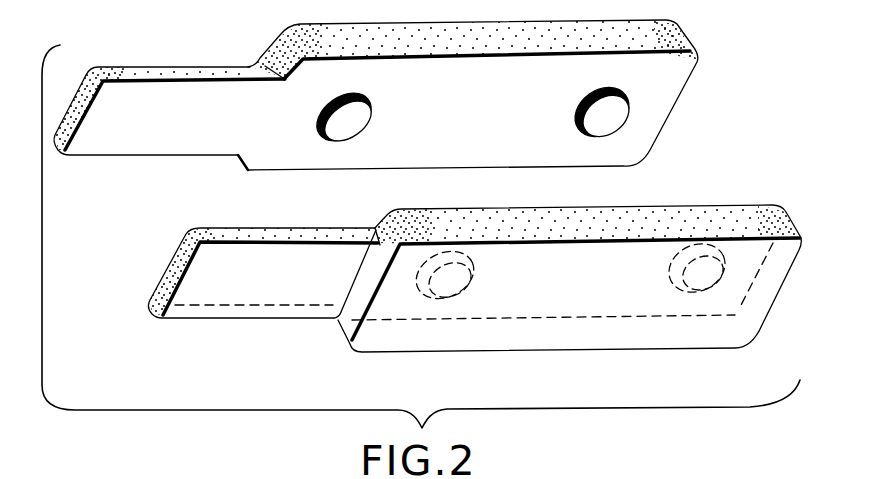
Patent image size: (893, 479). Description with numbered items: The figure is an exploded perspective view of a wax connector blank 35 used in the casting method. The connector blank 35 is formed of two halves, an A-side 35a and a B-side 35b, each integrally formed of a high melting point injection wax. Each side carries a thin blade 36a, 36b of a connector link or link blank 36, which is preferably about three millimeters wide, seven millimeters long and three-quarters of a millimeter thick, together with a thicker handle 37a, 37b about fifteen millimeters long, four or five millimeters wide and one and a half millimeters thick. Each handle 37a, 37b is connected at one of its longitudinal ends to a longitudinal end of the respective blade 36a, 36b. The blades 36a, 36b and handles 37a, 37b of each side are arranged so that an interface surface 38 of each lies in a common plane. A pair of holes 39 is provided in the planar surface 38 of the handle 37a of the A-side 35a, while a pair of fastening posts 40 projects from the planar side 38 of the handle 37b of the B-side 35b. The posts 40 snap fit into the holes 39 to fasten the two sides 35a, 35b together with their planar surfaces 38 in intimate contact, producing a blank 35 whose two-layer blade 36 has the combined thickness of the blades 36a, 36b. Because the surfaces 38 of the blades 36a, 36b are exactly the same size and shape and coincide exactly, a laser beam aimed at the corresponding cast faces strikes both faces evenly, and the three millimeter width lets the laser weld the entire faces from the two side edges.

The connector blank 35 is at (202, 402).
The A-side 35a is at (806, 190).
The B-side 35b is at (710, 100).
The connector link or link blank 36 is at (156, 54).
The blade of the A-side 36a is at (198, 272).
The blade of the B-side 36b is at (127, 67).
The handle of the A-side 37a is at (578, 346).
The handle of the B-side 37b is at (677, 25).
The interface surface 38 is at (393, 212).
The holes 39 is at (668, 268).
The fastening posts 40 is at (577, 107).